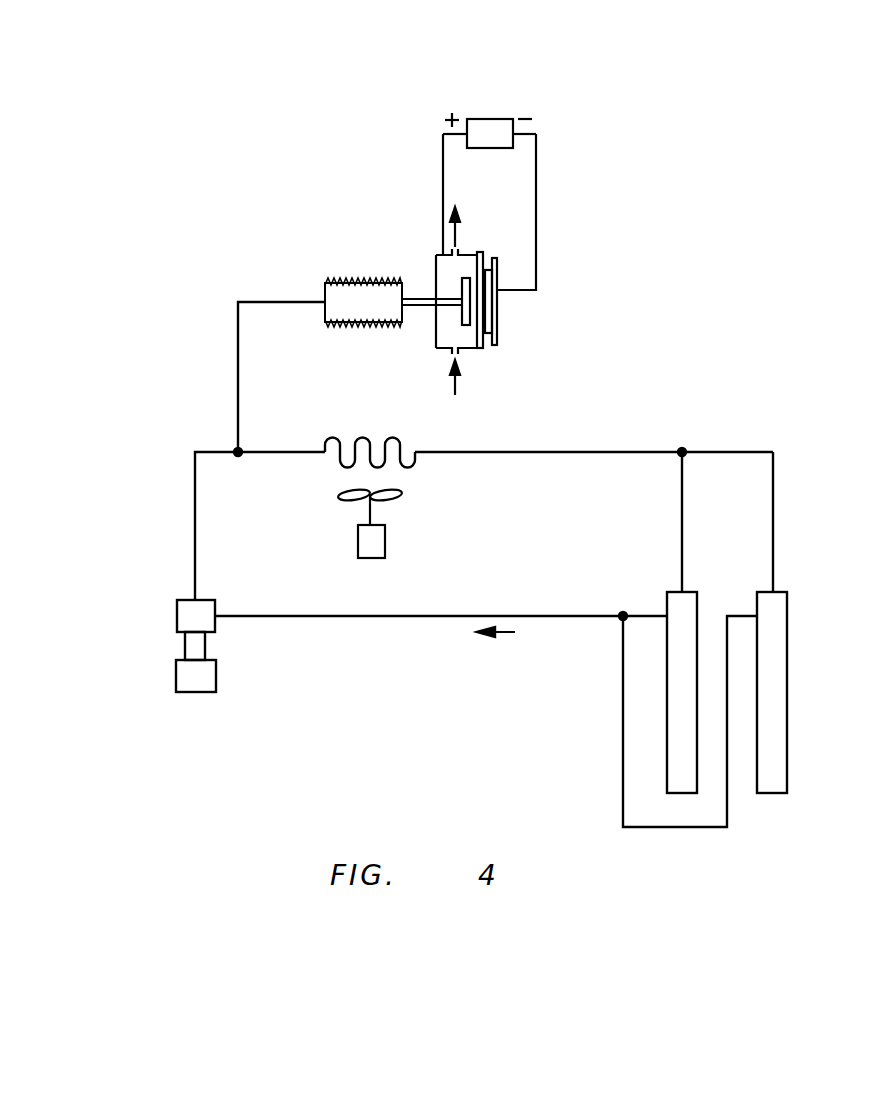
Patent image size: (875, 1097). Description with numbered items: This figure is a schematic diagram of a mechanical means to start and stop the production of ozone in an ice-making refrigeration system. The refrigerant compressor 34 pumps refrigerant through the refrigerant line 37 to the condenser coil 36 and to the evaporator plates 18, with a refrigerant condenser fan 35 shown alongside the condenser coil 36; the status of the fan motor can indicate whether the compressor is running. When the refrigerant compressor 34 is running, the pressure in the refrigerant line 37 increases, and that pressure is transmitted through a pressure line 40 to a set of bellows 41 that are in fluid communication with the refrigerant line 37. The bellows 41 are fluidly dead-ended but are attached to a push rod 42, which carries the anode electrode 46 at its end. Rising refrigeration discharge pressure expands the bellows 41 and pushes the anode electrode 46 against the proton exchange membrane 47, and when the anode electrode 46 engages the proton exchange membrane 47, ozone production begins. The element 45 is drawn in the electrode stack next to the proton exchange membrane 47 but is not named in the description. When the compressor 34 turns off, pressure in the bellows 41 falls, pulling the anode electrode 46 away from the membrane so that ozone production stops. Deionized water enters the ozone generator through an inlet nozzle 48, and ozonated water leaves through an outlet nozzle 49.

The evaporator plates 18 is at (697, 592).
The refrigerant compressor 34 is at (177, 615).
The refrigerant condenser fan 35 is at (374, 520).
The condenser coil 36 is at (327, 437).
The refrigerant line 37 is at (208, 451).
The pressure line 40 is at (256, 300).
The bellows 41 is at (339, 279).
The push rod 42 is at (423, 299).
The electrode plate 45 is at (494, 330).
The anode electrode 46 is at (462, 322).
The proton exchange membrane 47 is at (483, 257).
The inlet nozzle 48 is at (461, 353).
The outlet nozzle 49 is at (461, 250).